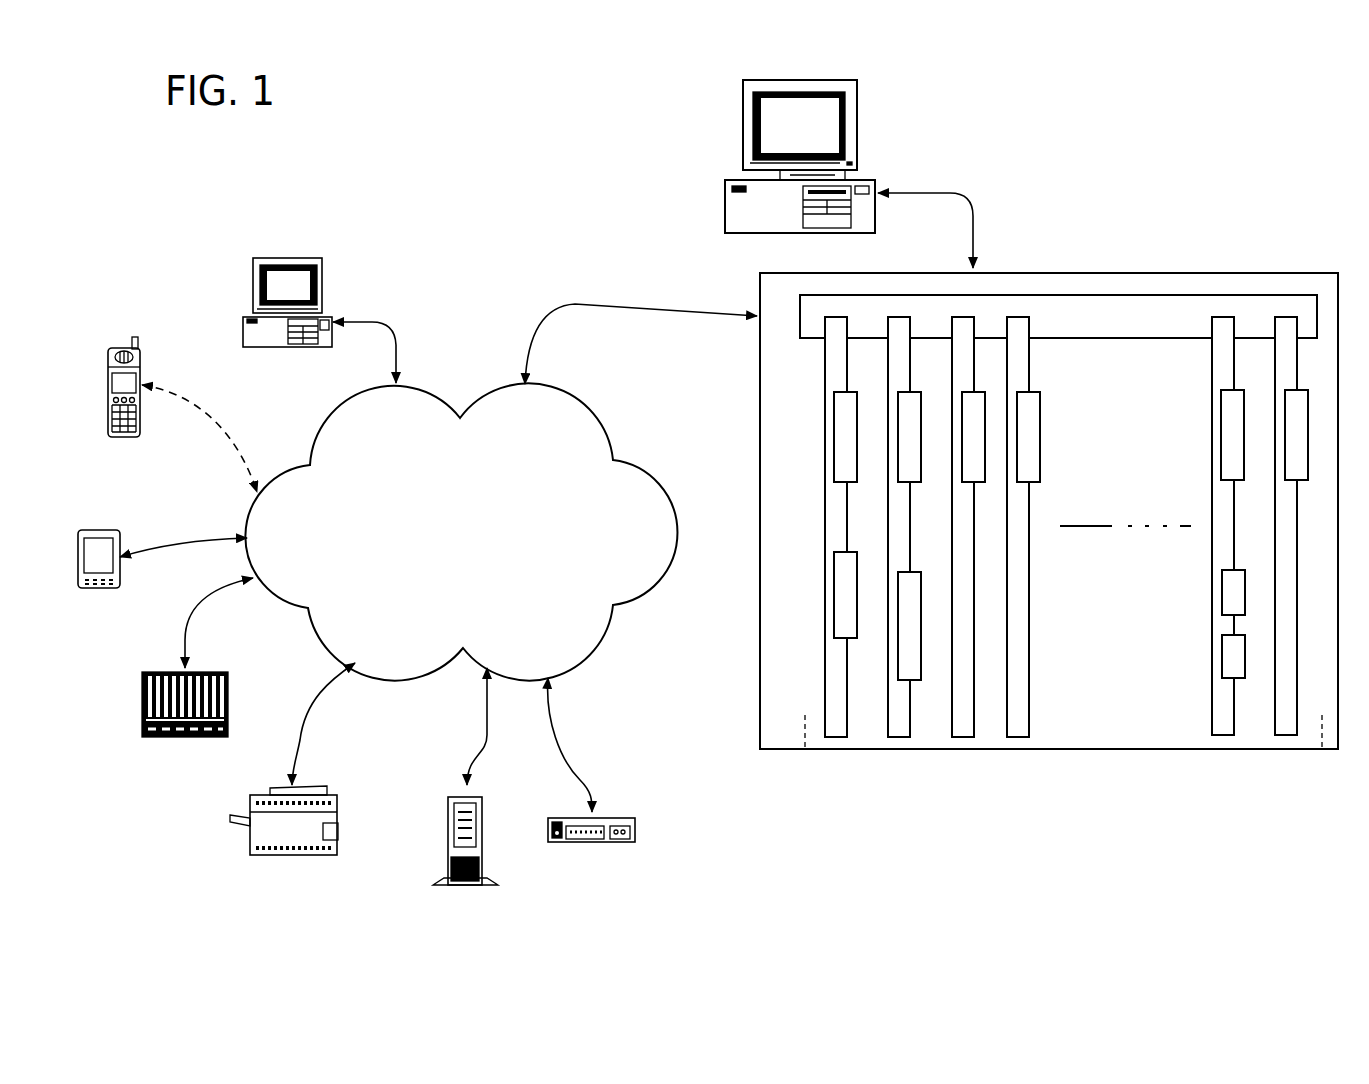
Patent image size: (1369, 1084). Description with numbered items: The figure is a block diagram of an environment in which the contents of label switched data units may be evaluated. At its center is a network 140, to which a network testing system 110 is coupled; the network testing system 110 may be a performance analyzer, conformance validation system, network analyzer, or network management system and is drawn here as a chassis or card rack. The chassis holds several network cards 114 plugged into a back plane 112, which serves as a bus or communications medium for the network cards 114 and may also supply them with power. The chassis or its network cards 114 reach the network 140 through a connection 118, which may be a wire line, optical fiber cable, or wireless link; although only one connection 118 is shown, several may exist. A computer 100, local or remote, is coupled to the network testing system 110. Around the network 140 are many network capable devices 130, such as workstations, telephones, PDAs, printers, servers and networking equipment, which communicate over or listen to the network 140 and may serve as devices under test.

The computer 100 is at (753, 125).
The network testing system 110 is at (1048, 273).
The back plane 112 is at (1297, 295).
The network cards 114 is at (805, 752).
The connection 118 is at (598, 305).
The network capable devices 130 is at (347, 605).
The network 140 is at (461, 531).